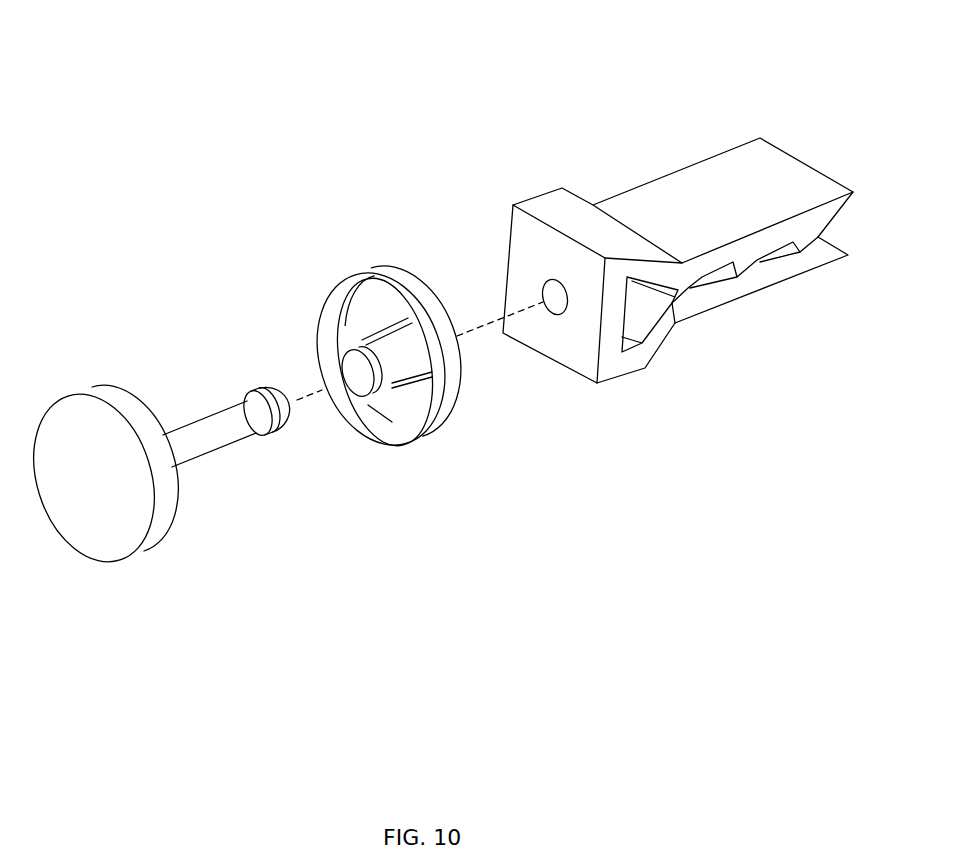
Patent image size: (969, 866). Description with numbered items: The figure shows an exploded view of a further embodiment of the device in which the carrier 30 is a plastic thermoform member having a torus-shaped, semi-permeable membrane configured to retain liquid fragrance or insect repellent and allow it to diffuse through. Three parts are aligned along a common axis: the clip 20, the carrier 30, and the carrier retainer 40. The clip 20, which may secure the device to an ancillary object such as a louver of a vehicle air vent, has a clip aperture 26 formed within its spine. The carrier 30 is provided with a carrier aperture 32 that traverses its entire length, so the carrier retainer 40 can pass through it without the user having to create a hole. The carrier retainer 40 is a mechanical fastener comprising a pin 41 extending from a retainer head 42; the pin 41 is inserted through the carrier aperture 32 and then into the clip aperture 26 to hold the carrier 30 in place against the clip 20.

The clip 20 is at (634, 195).
The clip aperture 26 is at (545, 288).
The carrier 30 is at (354, 376).
The carrier aperture 32 is at (358, 372).
The carrier retainer 40 is at (165, 490).
The pin 41 is at (212, 438).
The retainer head 42 is at (112, 490).